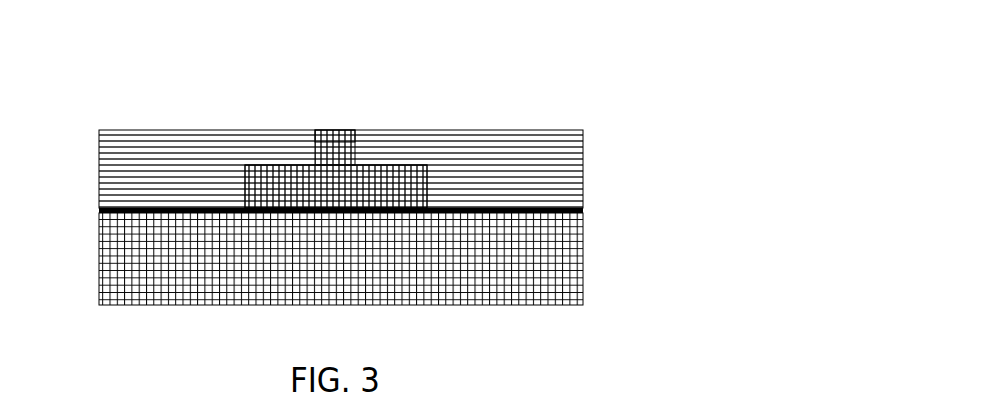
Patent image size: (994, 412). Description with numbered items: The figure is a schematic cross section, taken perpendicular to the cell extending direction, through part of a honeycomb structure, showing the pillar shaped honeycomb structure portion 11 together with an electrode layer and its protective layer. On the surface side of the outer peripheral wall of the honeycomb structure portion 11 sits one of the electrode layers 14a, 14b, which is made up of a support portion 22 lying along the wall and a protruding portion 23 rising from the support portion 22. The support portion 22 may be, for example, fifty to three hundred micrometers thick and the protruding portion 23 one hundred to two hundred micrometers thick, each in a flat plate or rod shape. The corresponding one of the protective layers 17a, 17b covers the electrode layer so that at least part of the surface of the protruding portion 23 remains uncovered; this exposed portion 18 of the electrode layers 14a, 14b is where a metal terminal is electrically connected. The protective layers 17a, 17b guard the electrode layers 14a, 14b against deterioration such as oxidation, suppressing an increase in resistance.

The pillar shaped honeycomb structure portion 11 is at (586, 266).
The electrode layer 14a is at (472, 134).
The electrode layer 14b is at (432, 173).
The protective layer 17a is at (504, 154).
The protective layer 17b is at (533, 180).
The exposed portion of electrode layer 18 is at (330, 130).
The support portion 22 is at (290, 191).
The protruding portion 23 is at (342, 154).